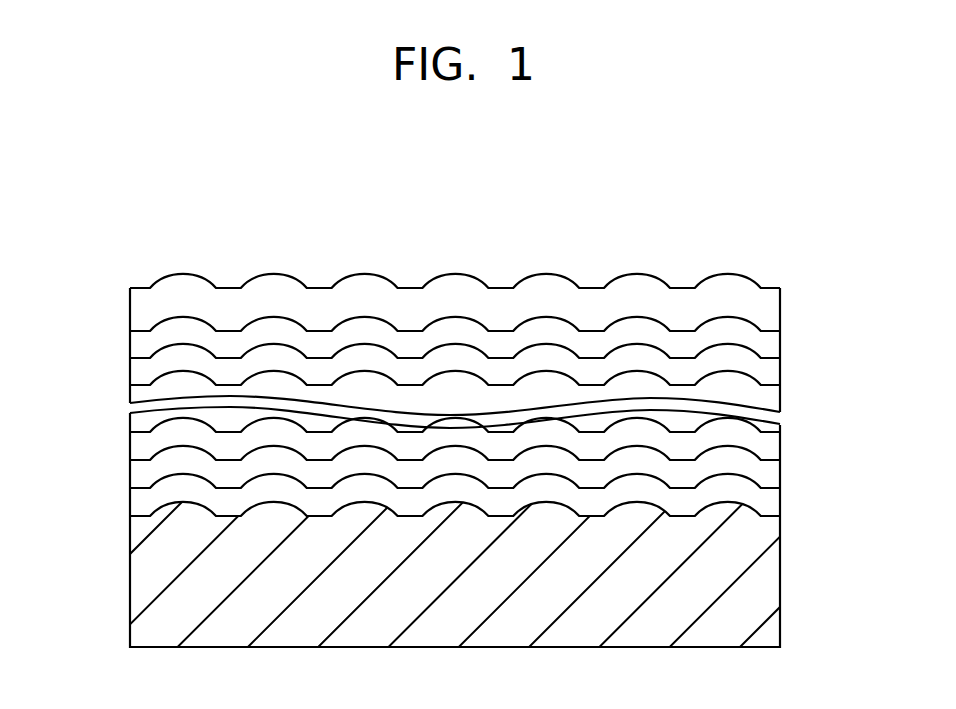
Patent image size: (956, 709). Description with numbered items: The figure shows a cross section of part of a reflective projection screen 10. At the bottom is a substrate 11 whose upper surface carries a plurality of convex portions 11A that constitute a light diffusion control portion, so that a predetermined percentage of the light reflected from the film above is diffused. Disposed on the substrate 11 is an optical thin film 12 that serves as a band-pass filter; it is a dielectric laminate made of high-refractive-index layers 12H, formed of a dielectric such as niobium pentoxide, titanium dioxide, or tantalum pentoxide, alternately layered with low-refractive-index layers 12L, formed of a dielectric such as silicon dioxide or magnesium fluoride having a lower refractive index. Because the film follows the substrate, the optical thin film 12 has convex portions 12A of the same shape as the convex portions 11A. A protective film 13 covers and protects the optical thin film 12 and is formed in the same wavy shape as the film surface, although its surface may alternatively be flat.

The projection screen 10 is at (680, 260).
The substrate 11 is at (768, 591).
The convex portions 11A is at (174, 504).
The optical thin film 12 is at (529, 426).
The convex portions 12A is at (174, 471).
The high-refractive-index layers 12H is at (768, 346).
The low-refractive-index layers 12L is at (768, 377).
The protective film 13 is at (765, 307).